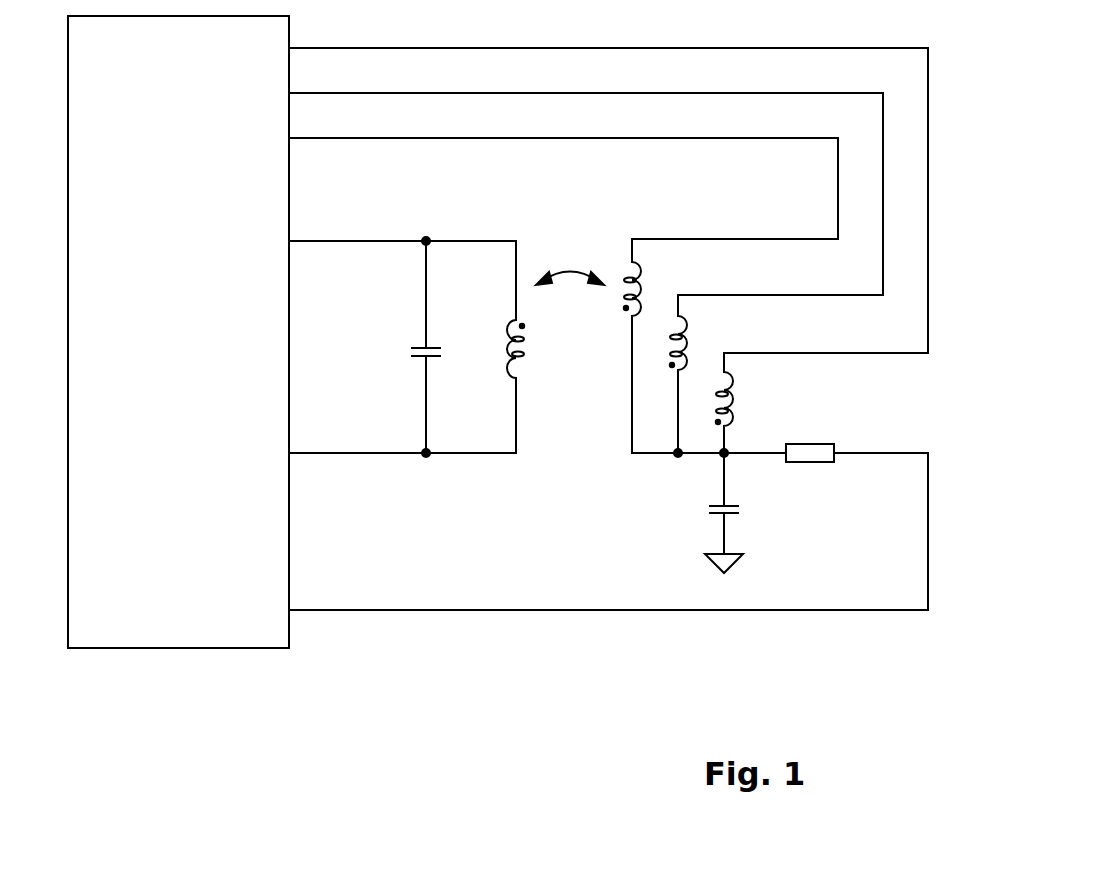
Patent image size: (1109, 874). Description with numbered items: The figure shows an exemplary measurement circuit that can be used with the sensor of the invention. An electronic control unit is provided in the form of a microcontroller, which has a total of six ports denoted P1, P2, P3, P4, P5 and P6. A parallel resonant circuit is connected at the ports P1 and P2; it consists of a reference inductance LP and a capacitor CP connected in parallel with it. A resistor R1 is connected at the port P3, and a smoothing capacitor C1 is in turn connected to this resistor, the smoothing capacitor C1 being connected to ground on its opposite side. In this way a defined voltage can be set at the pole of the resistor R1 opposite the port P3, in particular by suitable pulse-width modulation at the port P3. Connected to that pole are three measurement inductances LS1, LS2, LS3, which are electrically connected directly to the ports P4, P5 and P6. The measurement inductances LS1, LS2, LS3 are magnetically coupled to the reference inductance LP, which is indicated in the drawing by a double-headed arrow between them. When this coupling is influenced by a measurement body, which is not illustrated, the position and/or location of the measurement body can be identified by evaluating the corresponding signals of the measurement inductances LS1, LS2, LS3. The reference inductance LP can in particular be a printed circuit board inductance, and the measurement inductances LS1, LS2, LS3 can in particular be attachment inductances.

The port P1 is at (402, 231).
The port P2 is at (402, 444).
The port P3 is at (608, 532).
The port P4 is at (563, 179).
The port P5 is at (586, 185).
The port P6 is at (608, 191).
The capacitor CP is at (416, 347).
The reference inductance LP is at (500, 347).
The measurement inductance LS1 is at (651, 346).
The measurement inductance LS2 is at (697, 376).
The measurement inductance LS3 is at (751, 405).
The resistor R1 is at (810, 443).
The smoothing capacitor C1 is at (717, 513).